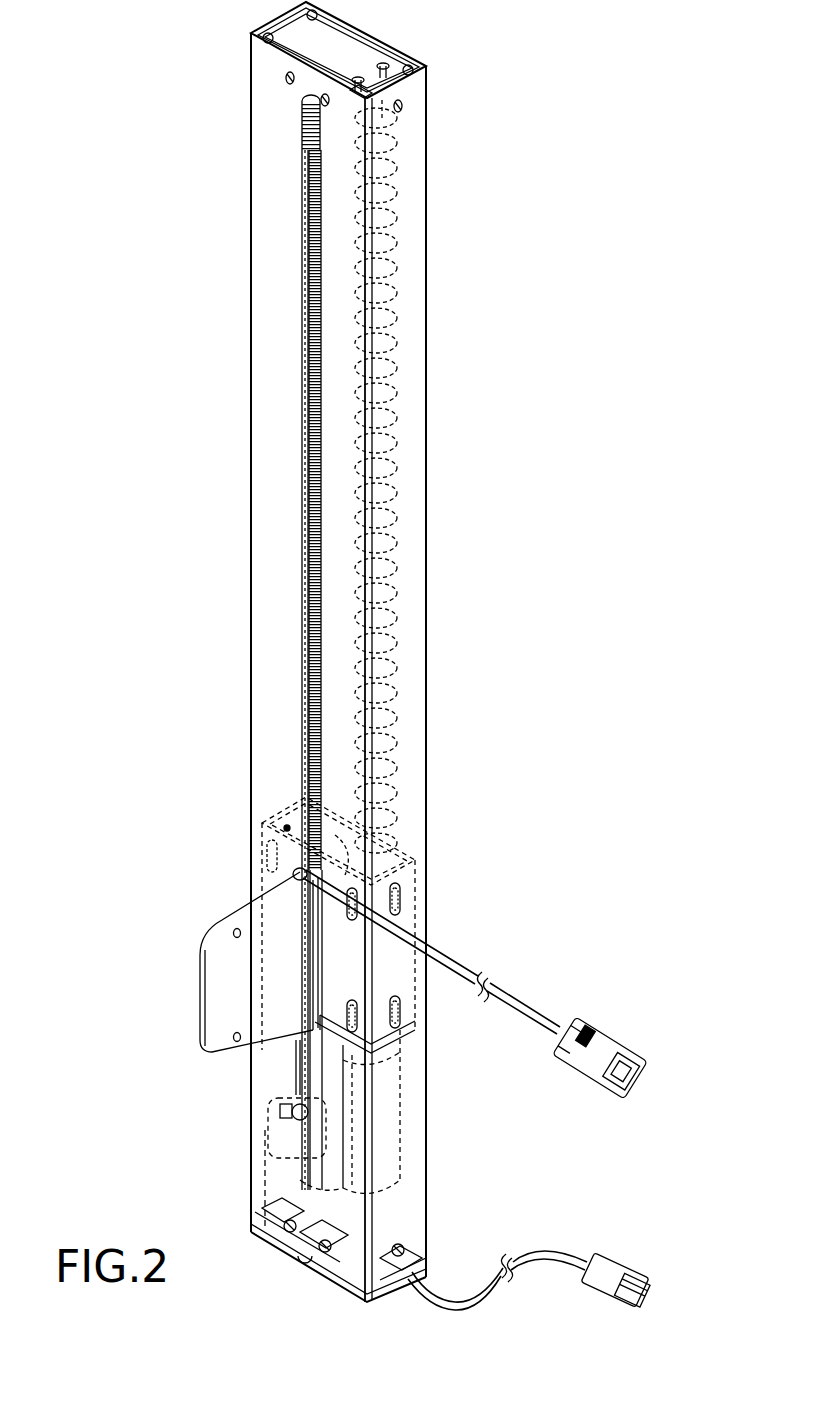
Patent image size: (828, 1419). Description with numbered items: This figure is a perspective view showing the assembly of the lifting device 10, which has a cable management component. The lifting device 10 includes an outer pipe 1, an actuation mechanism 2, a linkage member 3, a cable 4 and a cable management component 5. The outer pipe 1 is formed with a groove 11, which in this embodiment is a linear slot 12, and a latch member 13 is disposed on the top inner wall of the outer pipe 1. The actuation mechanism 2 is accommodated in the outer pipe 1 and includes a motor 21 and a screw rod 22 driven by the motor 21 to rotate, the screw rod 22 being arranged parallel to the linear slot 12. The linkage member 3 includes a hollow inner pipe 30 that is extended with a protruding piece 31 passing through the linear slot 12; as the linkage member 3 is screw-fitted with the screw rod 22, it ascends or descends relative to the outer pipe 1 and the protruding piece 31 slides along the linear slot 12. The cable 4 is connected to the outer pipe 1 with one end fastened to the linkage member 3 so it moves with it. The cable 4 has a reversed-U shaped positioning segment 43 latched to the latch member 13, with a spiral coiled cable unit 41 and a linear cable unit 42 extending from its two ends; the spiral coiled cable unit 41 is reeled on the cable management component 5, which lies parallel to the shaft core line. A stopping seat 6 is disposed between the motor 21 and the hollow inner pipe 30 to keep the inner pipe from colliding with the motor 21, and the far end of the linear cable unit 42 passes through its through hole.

The lifting device 10 is at (692, 70).
The outer pipe 1 is at (415, 467).
The latch member 13 is at (418, 58).
The groove 11 is at (303, 236).
The linear slot 12 is at (307, 288).
The screw rod 22 is at (305, 447).
The cable 4 is at (527, 270).
The spiral coiled cable unit 41 is at (397, 184).
The linear cable unit 42 is at (397, 232).
The positioning segment 43 is at (384, 114).
The cable management component 5 is at (402, 324).
The linkage member 3 is at (432, 866).
The hollow inner pipe 30 is at (420, 925).
The protruding piece 31 is at (233, 975).
The actuation mechanism 2 is at (425, 1087).
The motor 21 is at (400, 1127).
The stopping seat 6 is at (300, 1083).